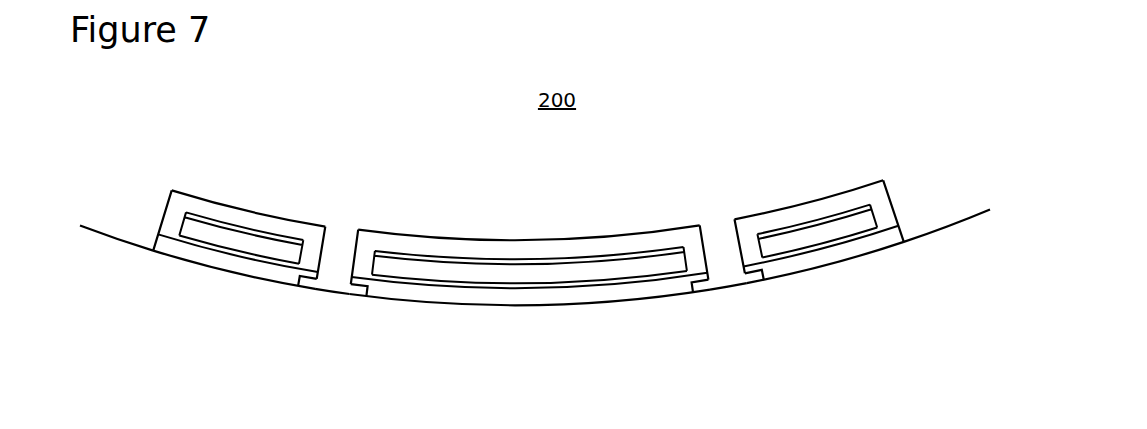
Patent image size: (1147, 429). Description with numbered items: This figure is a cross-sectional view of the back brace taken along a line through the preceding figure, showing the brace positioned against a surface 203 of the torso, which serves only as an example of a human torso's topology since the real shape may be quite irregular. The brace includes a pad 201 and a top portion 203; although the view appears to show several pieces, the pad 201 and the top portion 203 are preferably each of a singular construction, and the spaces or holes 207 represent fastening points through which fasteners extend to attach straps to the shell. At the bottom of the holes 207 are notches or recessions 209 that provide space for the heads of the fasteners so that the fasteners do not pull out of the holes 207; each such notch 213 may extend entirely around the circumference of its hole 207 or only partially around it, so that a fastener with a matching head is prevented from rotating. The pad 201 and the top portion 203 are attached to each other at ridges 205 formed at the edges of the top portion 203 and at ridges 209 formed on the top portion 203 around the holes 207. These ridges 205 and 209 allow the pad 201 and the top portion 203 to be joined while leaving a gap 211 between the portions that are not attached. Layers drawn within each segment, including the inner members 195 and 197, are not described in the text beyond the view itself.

The display module 195 is at (212, 220).
The intermediate layer 197 is at (268, 262).
The pad 201 is at (283, 273).
The top portion 203 is at (240, 208).
The ridges 205 is at (160, 225).
The holes 207 is at (344, 228).
The notches 209 is at (326, 262).
The gap 211 is at (233, 246).
The notch 213 is at (368, 292).